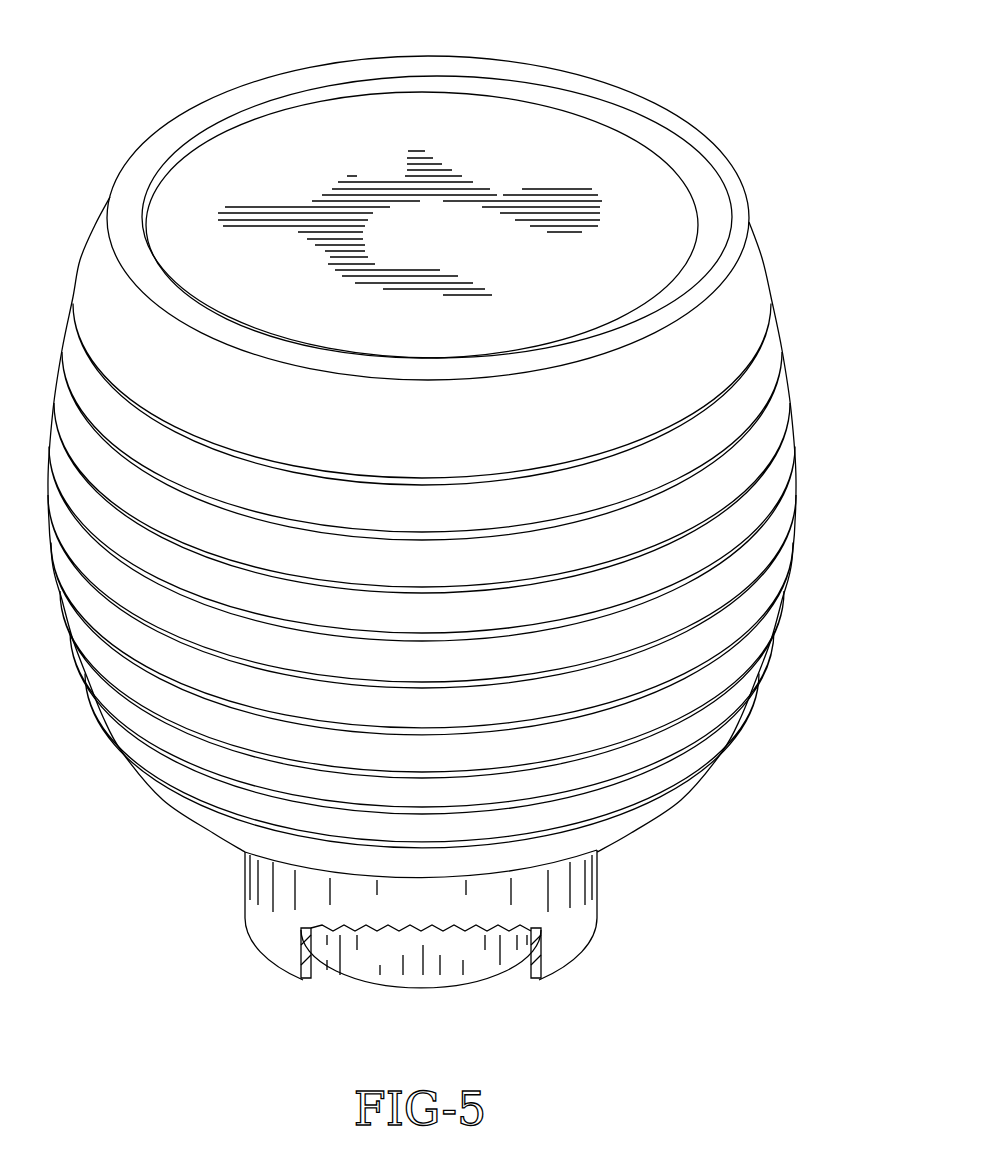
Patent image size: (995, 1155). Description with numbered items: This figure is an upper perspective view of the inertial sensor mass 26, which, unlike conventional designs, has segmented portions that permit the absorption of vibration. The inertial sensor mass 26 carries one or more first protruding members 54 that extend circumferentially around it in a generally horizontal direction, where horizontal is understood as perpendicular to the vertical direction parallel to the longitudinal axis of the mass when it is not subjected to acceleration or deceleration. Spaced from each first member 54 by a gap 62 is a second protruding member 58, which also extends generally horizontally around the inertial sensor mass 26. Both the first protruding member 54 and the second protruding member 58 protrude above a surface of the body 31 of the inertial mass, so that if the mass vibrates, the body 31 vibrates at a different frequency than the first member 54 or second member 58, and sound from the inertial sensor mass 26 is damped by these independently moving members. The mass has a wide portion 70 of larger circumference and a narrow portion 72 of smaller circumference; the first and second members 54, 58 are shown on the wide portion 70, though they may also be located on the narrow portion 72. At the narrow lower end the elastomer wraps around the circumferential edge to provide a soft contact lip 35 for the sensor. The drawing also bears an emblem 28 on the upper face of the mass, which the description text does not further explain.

The inertial sensor mass 26 is at (80, 262).
The emblem indicia 28 is at (497, 140).
The body 31 is at (262, 153).
The first protruding member 54 is at (762, 362).
The gap 62 is at (752, 423).
The second protruding member 58 is at (752, 452).
The wide portion 70 is at (780, 632).
The narrow portion 72 is at (603, 887).
The soft contact lip 35 is at (305, 972).